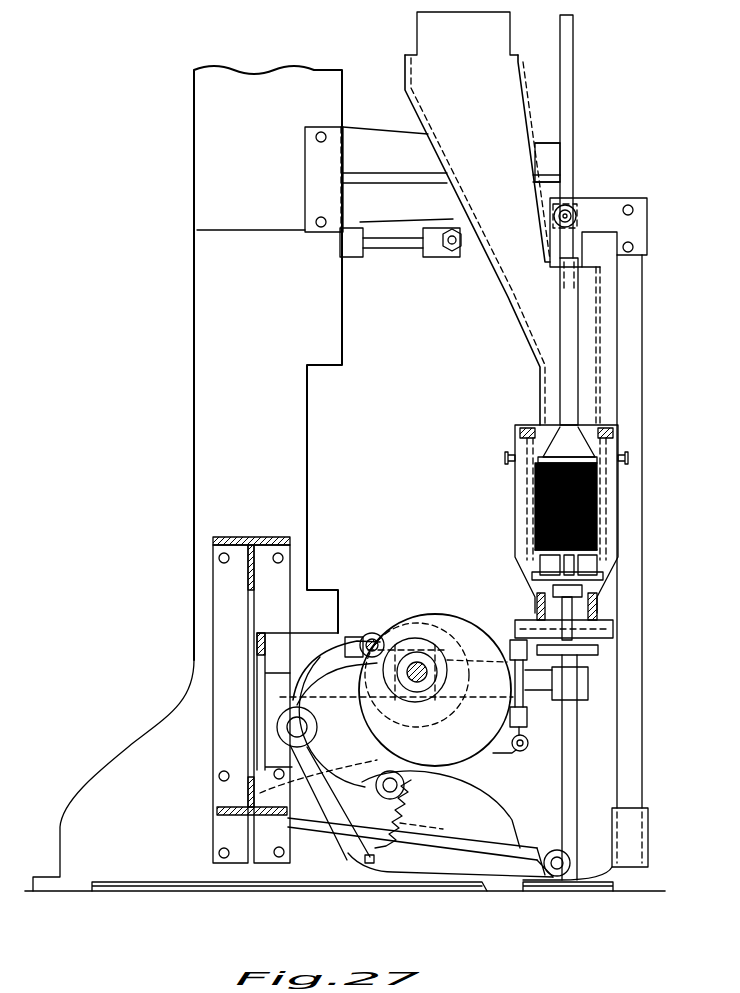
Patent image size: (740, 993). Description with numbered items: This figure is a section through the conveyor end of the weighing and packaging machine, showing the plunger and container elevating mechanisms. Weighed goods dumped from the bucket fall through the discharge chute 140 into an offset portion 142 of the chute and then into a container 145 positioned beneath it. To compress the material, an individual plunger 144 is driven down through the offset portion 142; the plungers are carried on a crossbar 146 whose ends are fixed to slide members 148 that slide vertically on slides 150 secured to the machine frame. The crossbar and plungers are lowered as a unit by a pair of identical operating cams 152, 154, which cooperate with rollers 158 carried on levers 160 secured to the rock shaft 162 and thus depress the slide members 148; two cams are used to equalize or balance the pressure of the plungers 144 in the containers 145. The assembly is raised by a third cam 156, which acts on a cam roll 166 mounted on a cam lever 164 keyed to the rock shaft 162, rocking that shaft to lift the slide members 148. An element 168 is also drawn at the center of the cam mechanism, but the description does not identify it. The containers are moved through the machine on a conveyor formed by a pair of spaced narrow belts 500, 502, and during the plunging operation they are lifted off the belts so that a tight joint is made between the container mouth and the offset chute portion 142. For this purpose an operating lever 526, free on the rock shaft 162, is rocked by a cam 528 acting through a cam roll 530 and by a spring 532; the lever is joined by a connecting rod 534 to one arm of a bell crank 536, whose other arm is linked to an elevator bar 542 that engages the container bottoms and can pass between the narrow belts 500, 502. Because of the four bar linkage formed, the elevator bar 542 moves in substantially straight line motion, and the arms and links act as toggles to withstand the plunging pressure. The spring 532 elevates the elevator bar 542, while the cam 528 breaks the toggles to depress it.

The discharge chute 140 is at (488, 280).
The offset portion of the discharge chute 142 is at (600, 358).
The plunger 144 is at (568, 325).
The container 145 is at (605, 505).
The crossbar 146 is at (570, 207).
The slide member 148 is at (577, 110).
The slide 150 is at (545, 145).
The operating cam 152 is at (253, 797).
The operating cam 154 is at (253, 805).
The third cam 156 is at (424, 615).
The roller 158 is at (352, 850).
The lever 160 is at (443, 832).
The rock shaft 162 is at (290, 727).
The cam lever 164 is at (316, 632).
The cam roll 166 is at (393, 630).
The shaft 168 is at (420, 664).
The narrow belt 500 is at (533, 560).
The narrow belt 502 is at (600, 562).
The operating lever 526 is at (493, 762).
The cam 528 is at (432, 640).
The cam roll 530 is at (373, 640).
The spring 532 is at (410, 787).
The connecting rod 534 is at (525, 687).
The bell crank 536 is at (516, 640).
The elevator bar 542 is at (603, 557).